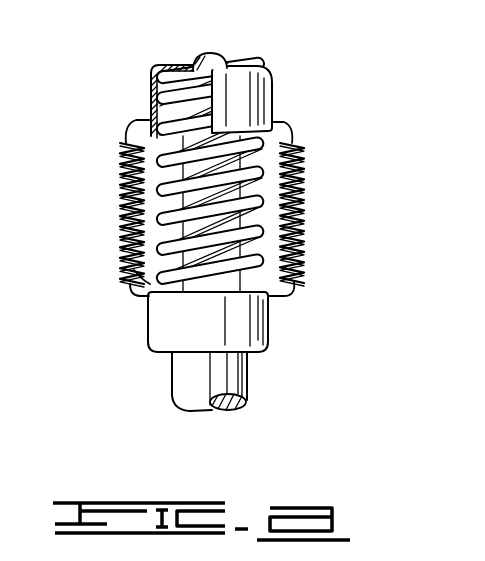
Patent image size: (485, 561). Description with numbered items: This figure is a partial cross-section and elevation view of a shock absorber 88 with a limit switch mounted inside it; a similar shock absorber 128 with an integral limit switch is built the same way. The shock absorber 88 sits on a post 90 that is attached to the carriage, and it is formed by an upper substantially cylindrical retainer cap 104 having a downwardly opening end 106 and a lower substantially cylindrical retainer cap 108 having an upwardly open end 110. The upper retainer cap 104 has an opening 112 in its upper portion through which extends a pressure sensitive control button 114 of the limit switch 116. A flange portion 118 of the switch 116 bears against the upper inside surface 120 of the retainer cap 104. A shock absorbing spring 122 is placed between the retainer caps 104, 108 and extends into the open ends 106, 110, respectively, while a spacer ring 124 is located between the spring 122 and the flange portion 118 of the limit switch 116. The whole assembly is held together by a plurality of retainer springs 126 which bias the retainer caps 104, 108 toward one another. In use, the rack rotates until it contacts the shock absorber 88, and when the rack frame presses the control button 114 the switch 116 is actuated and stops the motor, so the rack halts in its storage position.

The shock absorber 88 is at (139, 67).
The shock absorber 128 is at (199, 211).
The post 90 is at (185, 377).
The upper retainer cap 104 is at (246, 70).
The downwardly opening end 106 is at (242, 124).
The lower retainer cap 108 is at (158, 320).
The upwardly open end 110 is at (142, 270).
The opening 112 is at (200, 56).
The pressure sensitive control button 114 is at (227, 60).
The limit switch 116 is at (156, 140).
The flange portion 118 is at (150, 76).
The upper inside surface 120 is at (186, 63).
The shock absorbing spring 122 is at (124, 186).
The spacer ring 124 is at (152, 88).
The retainer springs 126 is at (124, 208).